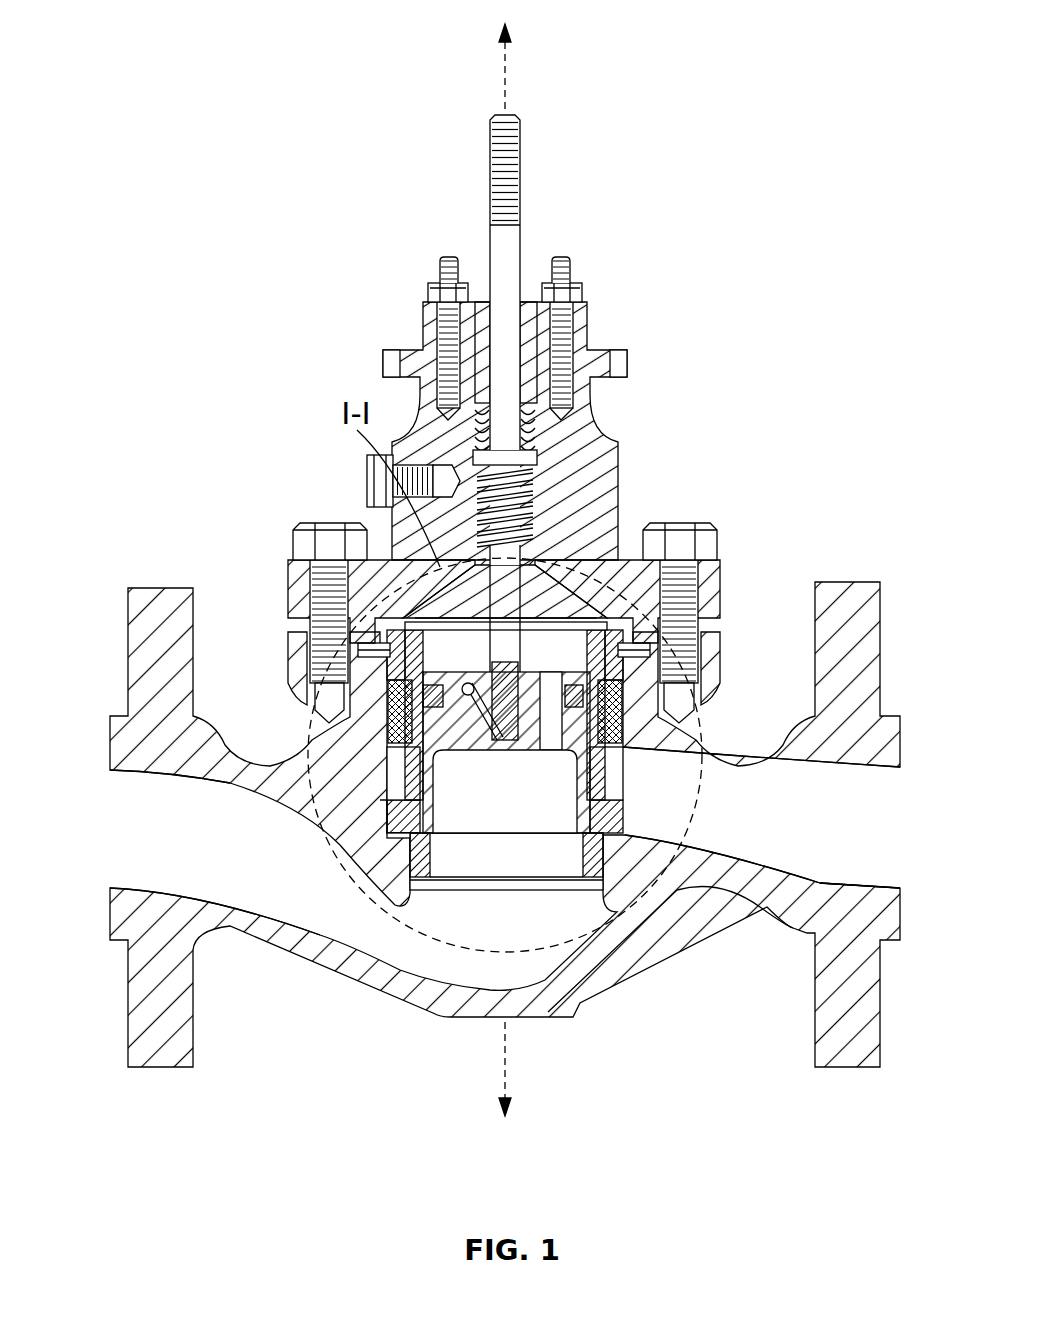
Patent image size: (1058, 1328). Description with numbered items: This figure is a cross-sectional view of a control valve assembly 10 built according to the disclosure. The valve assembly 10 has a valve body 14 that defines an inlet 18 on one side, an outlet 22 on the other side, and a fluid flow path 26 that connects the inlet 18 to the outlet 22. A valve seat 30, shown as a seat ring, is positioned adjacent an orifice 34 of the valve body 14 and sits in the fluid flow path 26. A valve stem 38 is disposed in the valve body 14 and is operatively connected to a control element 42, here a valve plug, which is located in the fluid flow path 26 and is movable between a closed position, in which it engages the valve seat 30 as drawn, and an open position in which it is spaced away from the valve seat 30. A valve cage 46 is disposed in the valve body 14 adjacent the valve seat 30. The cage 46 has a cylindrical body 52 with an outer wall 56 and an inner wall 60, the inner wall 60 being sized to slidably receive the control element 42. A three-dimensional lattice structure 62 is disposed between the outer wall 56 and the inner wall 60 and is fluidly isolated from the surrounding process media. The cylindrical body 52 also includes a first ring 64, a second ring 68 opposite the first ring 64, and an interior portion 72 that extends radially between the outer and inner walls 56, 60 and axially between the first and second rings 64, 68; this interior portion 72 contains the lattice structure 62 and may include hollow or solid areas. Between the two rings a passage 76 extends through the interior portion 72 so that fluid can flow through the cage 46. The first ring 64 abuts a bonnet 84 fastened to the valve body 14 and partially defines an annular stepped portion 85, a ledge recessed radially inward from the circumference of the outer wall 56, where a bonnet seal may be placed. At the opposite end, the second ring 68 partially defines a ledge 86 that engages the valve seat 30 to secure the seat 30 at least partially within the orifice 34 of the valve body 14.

The valve assembly 10 is at (648, 90).
The valve body 14 is at (300, 935).
The inlet 18 is at (130, 800).
The outlet 22 is at (887, 808).
The fluid flow path 26 is at (498, 941).
The valve seat 30 is at (672, 880).
The orifice 34 is at (385, 835).
The valve stem 38 is at (590, 520).
The control element 42 is at (548, 812).
The valve cage 46 is at (300, 598).
The cylindrical body 52 is at (613, 845).
The outer wall 56 is at (716, 600).
The inner wall 60 is at (585, 580).
The three-dimensional lattice structure 62 is at (610, 725).
The first ring 64 is at (365, 580).
The second ring 68 is at (372, 870).
The interior portion 72 is at (345, 835).
The passage 76 is at (340, 740).
The bonnet 84 is at (592, 420).
The annular stepped portion 85 is at (335, 590).
The ledge 86 is at (385, 822).